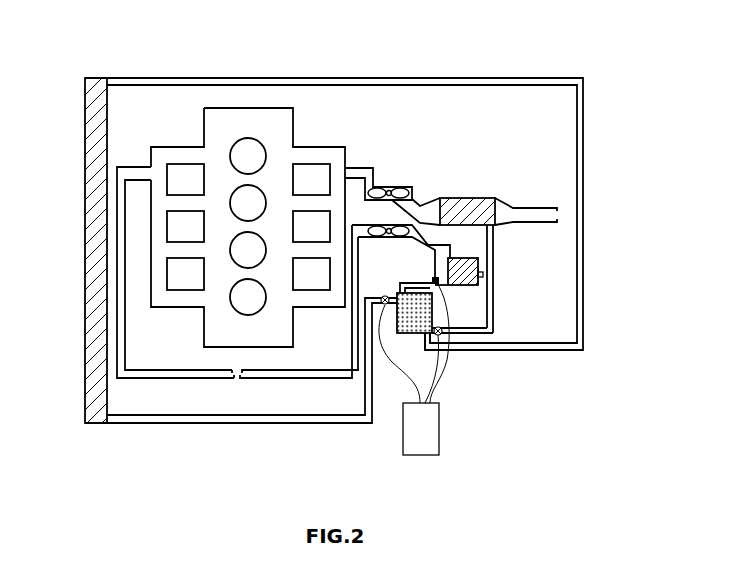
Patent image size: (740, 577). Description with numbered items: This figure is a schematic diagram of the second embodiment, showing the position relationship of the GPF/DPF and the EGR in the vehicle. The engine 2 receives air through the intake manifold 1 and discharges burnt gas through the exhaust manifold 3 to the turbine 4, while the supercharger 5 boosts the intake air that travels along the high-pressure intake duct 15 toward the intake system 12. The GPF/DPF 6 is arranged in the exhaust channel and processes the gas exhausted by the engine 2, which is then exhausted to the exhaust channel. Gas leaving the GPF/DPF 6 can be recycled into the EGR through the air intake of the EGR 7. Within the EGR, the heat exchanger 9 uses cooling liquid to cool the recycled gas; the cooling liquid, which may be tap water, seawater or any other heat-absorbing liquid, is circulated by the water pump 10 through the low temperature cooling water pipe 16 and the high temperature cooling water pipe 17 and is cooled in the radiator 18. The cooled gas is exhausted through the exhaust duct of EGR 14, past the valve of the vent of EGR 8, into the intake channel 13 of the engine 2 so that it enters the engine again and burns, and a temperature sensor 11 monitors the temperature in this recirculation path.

The intake manifold 1 is at (168, 203).
The engine 2 is at (228, 120).
The exhaust manifold 3 is at (312, 157).
The turbine 4 is at (390, 185).
The supercharger 5 is at (405, 226).
The GPF/DPF 6 is at (465, 215).
The air intake of the EGR 7 is at (493, 245).
The valve of the vent of EGR 8 is at (442, 332).
The heat exchanger 9 is at (441, 335).
The water pump 10 is at (385, 303).
The temperature sensor 11 is at (438, 282).
The intake system 12 is at (478, 278).
The intake channel 13 is at (455, 251).
The exhaust duct of EGR 14 is at (437, 258).
The high-pressure intake duct 15 is at (298, 378).
The low temperature cooling water pipe 16 is at (230, 423).
The high temperature cooling water pipe 17 is at (165, 77).
The radiator 18 is at (105, 258).